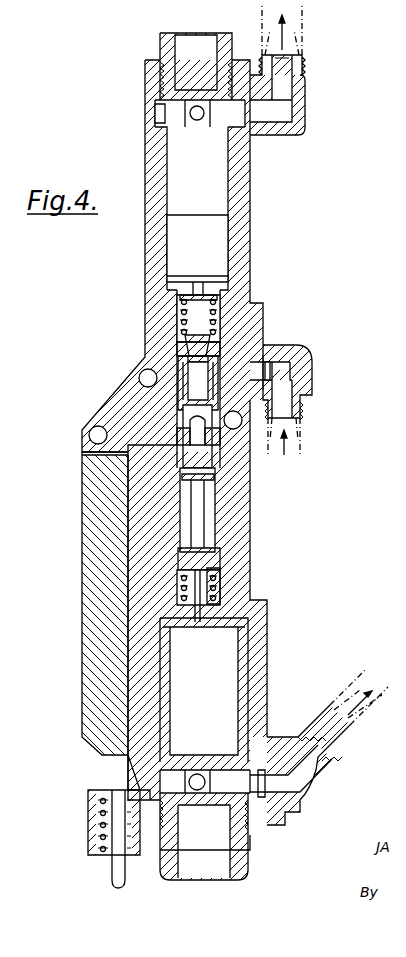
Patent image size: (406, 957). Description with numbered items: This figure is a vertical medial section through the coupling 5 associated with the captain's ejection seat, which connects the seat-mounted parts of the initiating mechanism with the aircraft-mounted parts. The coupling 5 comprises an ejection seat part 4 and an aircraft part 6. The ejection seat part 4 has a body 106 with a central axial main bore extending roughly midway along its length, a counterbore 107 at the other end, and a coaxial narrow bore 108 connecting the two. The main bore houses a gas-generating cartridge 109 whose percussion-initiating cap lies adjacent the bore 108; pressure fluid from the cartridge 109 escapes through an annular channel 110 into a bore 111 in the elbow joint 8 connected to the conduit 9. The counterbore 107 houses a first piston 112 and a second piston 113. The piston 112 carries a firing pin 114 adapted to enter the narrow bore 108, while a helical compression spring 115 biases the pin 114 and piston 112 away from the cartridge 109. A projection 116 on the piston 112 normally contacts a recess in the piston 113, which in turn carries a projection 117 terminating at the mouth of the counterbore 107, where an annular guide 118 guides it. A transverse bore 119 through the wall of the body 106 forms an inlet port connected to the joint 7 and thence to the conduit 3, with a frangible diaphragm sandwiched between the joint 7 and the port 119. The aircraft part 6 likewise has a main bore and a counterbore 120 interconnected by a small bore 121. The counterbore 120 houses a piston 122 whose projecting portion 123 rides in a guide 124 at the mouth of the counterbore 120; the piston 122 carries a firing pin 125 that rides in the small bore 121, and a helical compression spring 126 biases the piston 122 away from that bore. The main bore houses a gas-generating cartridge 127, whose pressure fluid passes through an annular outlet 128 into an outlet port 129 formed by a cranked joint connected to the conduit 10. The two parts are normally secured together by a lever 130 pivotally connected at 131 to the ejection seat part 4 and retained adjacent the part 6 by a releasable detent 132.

The conduit 3 is at (300, 444).
The ejection seat part 4 is at (240, 258).
The coupling 5 is at (112, 398).
The aircraft part 6 is at (240, 520).
The joint 7 is at (296, 376).
The elbow joint 8 is at (298, 108).
The conduit 9 is at (296, 50).
The conduit 10 is at (344, 698).
The body 106 is at (148, 228).
The counterbore 107 is at (186, 300).
The narrow bore 108 is at (205, 292).
The gas-generating cartridge 109 is at (215, 237).
The annular channel 110 is at (155, 113).
The bore 111 is at (290, 92).
The first piston 112 is at (220, 350).
The second piston 113 is at (240, 388).
The firing pin 114 is at (217, 313).
The helical compression spring 115 is at (186, 340).
The projection 116 is at (200, 366).
The projection 117 is at (128, 455).
The annular guide 118 is at (223, 440).
The transverse bore 119 is at (240, 372).
The counterbore 120 is at (180, 540).
The small bore 121 is at (190, 560).
The piston 122 is at (184, 578).
The projecting portion 123 is at (186, 518).
The guide 124 is at (196, 492).
The firing pin 125 is at (196, 600).
The helical compression spring 126 is at (214, 592).
The gas-generating cartridge 127 is at (230, 665).
The annular outlet 128 is at (258, 765).
The outlet port 129 is at (318, 775).
The lever 130 is at (100, 723).
The pivot 131 is at (89, 439).
The releasable detent 132 is at (112, 803).